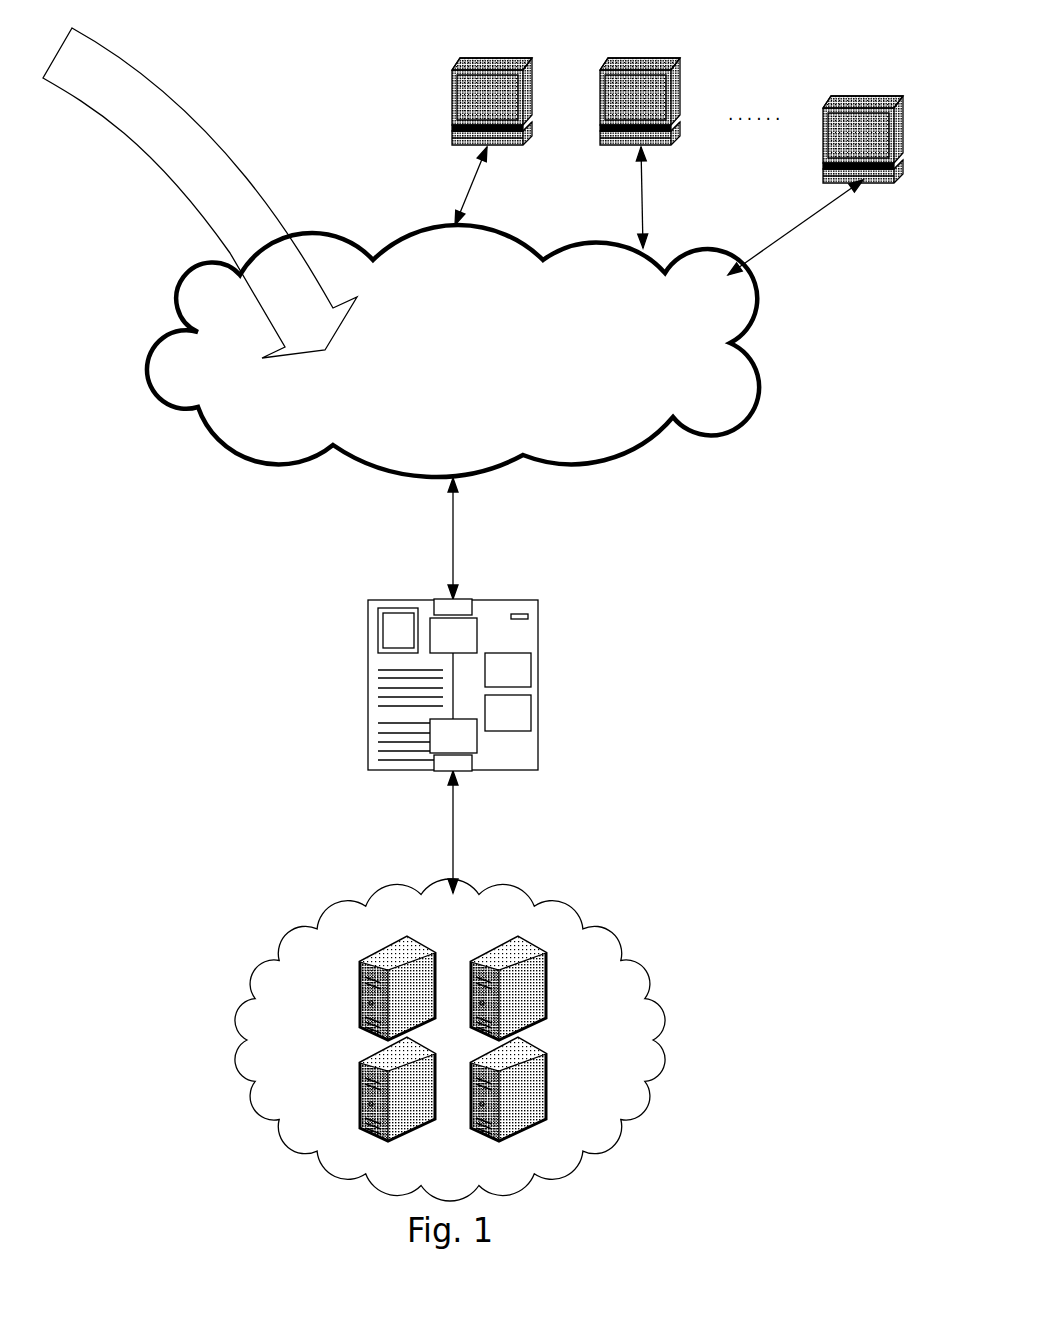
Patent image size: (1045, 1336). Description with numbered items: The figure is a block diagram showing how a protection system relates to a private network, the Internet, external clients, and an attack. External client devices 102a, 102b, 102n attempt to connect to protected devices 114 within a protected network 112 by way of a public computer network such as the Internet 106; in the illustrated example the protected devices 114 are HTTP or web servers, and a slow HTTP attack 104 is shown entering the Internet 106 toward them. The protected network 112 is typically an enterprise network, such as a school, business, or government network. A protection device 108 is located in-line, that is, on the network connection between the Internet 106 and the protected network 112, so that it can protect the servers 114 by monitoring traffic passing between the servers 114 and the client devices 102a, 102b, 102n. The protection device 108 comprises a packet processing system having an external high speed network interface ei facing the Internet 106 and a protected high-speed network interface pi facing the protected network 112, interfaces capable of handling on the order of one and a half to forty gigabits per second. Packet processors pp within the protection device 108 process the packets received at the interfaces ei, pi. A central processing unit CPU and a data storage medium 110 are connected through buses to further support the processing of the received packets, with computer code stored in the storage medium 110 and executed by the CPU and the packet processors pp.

The client device 102a is at (493, 66).
The client device 102b is at (641, 66).
The client device 102n is at (865, 102).
The slow HTTP attack 104 is at (192, 104).
The Internet 106 is at (157, 343).
The protection device 108 is at (368, 682).
The data storage medium 110 is at (531, 715).
The protected network 112 is at (648, 1042).
The protected devices 114 is at (370, 952).
The external high speed network interface ei is at (472, 610).
The packet processors pp is at (477, 640).
The protected high-speed network interface pi is at (472, 762).
The central processing unit CPU is at (531, 672).